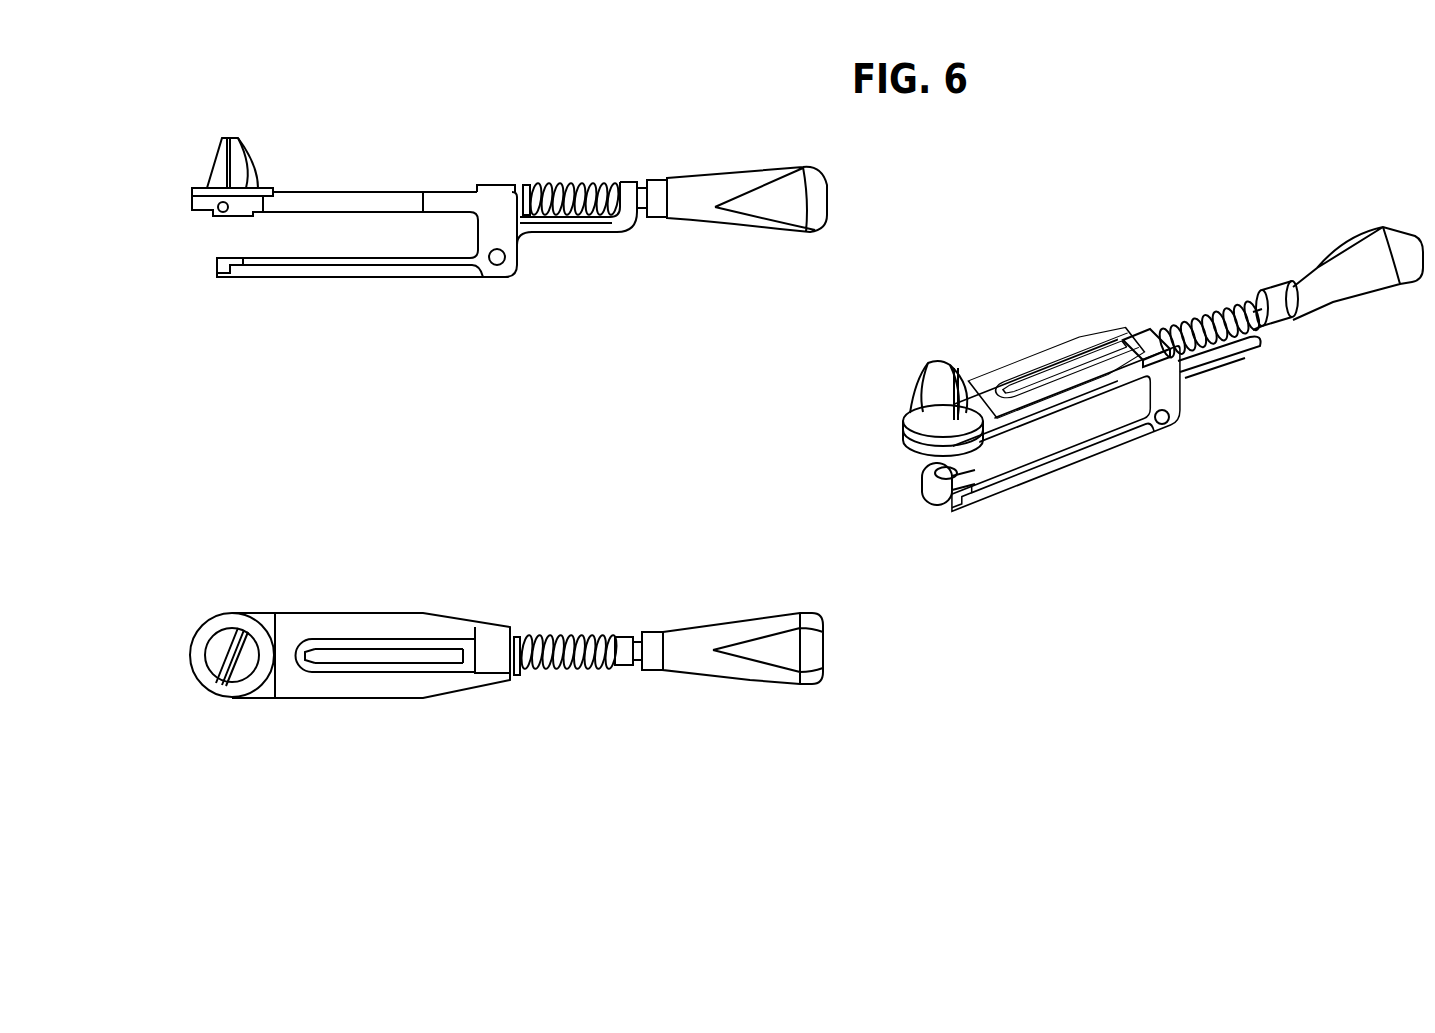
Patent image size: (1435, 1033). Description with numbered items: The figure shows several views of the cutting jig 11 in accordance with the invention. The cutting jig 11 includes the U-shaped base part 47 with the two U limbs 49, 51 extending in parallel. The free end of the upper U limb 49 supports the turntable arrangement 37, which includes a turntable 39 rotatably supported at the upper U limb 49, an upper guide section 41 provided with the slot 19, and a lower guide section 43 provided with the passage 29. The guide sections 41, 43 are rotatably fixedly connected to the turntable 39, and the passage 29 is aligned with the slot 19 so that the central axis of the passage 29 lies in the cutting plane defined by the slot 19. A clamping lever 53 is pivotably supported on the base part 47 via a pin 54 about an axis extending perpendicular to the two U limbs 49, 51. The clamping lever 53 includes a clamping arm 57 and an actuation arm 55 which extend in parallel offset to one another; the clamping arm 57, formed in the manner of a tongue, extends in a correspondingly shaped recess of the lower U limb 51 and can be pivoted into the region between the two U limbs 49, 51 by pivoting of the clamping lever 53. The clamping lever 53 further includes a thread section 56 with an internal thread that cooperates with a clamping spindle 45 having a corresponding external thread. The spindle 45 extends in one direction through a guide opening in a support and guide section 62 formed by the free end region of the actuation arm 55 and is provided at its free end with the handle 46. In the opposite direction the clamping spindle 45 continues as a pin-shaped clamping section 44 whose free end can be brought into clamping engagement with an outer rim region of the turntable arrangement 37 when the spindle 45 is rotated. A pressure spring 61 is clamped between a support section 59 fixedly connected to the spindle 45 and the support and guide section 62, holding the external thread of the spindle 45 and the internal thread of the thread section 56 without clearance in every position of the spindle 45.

The cutting jig 11 is at (580, 128).
The slot 19 is at (206, 172).
The passage 29 is at (223, 213).
The turntable arrangement 37 is at (206, 135).
The turntable 39 is at (192, 192).
The upper guide section 41 is at (238, 140).
The lower guide section 43 is at (193, 205).
The pin-shaped clamping section 44 is at (340, 640).
The clamping spindle 45 is at (526, 185).
The handle 46 is at (780, 178).
The U-shaped base part 47 is at (371, 185).
The upper U limb 49 is at (322, 192).
The lower U limb 51 is at (350, 266).
The clamping lever 53 is at (568, 238).
The pin 54 is at (498, 265).
The actuation arm 55 is at (622, 228).
The thread section 56 is at (488, 186).
The clamping arm 57 is at (1053, 440).
The support section 59 is at (532, 185).
The pressure spring 61 is at (585, 185).
The support and guide section 62 is at (630, 188).